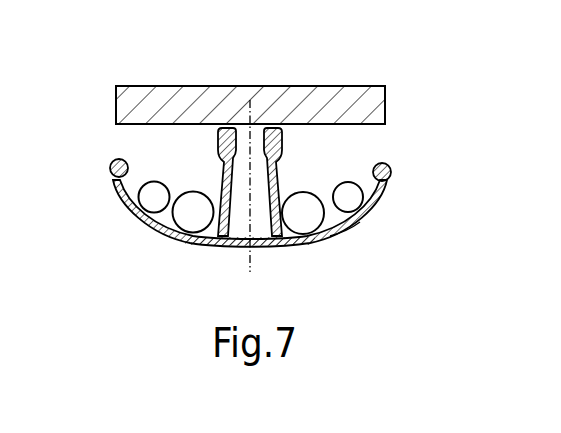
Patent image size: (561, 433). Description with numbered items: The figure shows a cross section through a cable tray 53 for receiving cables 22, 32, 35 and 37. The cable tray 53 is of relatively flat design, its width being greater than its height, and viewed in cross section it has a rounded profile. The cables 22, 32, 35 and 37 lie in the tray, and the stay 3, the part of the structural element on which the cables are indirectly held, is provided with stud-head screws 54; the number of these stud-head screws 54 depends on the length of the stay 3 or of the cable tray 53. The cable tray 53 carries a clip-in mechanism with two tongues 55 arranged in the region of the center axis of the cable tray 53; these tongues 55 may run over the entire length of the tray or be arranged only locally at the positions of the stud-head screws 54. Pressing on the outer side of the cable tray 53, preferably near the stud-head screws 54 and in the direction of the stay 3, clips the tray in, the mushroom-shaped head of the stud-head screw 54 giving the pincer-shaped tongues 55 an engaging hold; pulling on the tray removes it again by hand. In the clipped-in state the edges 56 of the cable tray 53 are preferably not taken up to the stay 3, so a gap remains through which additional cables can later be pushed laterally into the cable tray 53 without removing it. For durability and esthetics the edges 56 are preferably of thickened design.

The stay 3 is at (305, 105).
The stud-head screws 54 is at (243, 127).
The tongues 55 is at (220, 171).
The cable tray 53 is at (386, 213).
The edges 56 is at (109, 162).
The cable 22 is at (307, 222).
The cable 32 is at (192, 220).
The cable 37 is at (157, 197).
The cable 35 is at (356, 242).